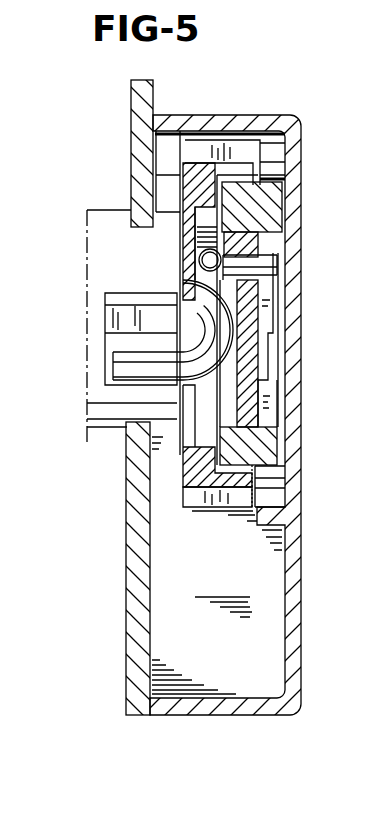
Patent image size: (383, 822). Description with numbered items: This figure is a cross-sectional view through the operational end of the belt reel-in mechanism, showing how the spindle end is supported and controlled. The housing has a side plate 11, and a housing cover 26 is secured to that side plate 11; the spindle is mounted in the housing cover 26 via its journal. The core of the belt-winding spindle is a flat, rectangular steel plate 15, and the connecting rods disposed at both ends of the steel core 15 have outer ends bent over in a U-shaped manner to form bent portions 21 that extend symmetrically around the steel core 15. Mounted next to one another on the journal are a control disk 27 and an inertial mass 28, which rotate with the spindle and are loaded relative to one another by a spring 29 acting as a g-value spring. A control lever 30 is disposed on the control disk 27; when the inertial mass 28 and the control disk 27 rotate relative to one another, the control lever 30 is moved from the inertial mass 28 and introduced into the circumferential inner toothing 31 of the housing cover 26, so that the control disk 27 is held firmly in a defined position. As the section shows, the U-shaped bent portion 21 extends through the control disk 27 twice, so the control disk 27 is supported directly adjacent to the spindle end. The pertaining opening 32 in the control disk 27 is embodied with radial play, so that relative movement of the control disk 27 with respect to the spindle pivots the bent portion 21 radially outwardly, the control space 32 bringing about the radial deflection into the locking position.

The side plate 11 is at (133, 100).
The steel plate 15 is at (113, 321).
The bent portion 21 is at (120, 360).
The housing cover 26 is at (288, 604).
The control disk 27 is at (205, 162).
The inertial mass 28 is at (277, 201).
The spring 29 is at (199, 258).
The control lever 30 is at (270, 385).
The circumferential inner toothing 31 is at (275, 500).
The opening 32 is at (185, 325).